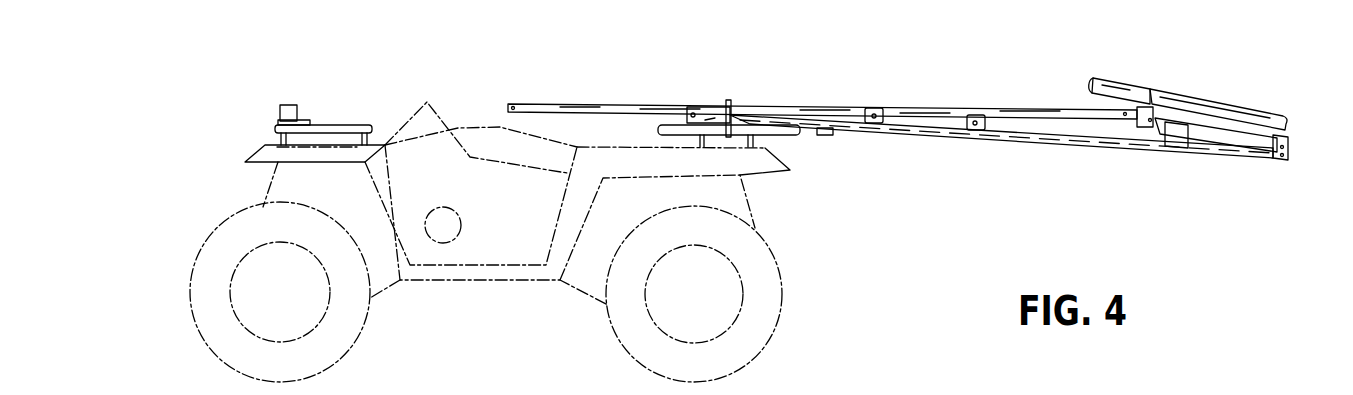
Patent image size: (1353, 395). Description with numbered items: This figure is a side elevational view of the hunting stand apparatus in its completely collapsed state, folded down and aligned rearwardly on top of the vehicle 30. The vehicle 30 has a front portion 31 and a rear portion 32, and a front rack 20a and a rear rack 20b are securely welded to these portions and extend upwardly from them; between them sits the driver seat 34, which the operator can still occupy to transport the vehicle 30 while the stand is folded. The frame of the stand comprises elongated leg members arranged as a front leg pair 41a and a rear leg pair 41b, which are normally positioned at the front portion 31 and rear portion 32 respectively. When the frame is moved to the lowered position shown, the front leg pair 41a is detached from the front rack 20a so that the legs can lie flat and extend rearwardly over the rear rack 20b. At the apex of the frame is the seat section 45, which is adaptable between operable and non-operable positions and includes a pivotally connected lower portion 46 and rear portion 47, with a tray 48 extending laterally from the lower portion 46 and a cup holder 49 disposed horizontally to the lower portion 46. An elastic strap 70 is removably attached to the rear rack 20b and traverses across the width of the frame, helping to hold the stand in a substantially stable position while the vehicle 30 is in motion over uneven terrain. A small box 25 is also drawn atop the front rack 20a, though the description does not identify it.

The front rack 20a is at (343, 124).
The rear rack 20b is at (800, 131).
The control box 25 is at (288, 104).
The vehicle 30 is at (388, 286).
The front portion 31 is at (255, 158).
The rear portion 32 is at (763, 173).
The driver seat 34 is at (458, 127).
The front leg pair 41a is at (918, 106).
The rear leg pair 41b is at (1068, 145).
The seat section 45 is at (1120, 83).
The lower portion 46 is at (1187, 102).
The rear portion 47 is at (1090, 88).
The tray 48 is at (1243, 130).
The cup holder 49 is at (1168, 148).
The elastic strap 70 is at (728, 100).